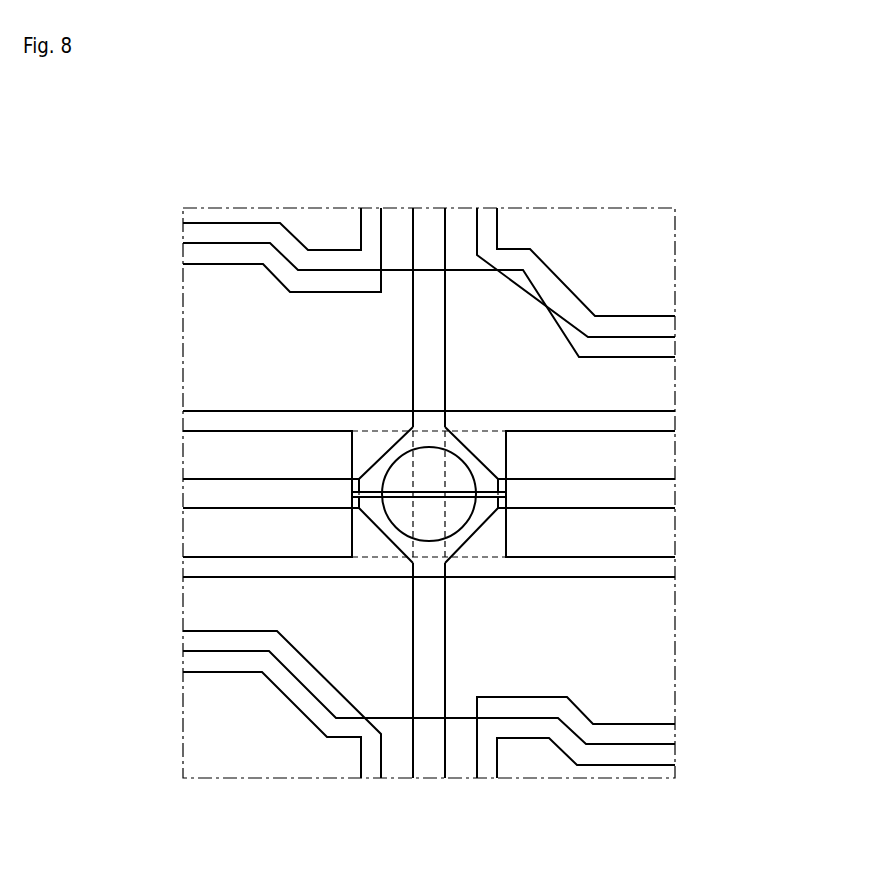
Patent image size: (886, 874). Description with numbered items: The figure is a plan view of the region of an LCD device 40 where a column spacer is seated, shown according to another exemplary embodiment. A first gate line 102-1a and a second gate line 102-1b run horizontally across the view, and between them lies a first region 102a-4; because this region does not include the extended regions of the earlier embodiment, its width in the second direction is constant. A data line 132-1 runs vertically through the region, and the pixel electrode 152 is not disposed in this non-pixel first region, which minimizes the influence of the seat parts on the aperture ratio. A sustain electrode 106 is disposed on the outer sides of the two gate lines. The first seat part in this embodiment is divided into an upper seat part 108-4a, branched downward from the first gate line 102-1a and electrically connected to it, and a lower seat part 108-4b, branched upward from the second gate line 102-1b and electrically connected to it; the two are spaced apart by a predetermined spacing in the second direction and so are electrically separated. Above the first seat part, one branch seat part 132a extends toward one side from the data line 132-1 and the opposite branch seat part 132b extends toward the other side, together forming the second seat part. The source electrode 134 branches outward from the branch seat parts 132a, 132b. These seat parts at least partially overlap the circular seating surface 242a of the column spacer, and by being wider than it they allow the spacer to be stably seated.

The LCD device 40 is at (431, 166).
The pixel electrode 152 is at (289, 220).
The sustain electrode 106 is at (187, 234).
The data line 132-1 is at (432, 398).
The first gate line 102-1a is at (197, 421).
The second gate line 102-1b is at (197, 567).
The first region 102a-4 is at (198, 457).
The source electrode 134 is at (198, 492).
The 1-1st seat part 108-4a is at (367, 447).
The seating surface 242a is at (462, 473).
The 2-1st seat part 132a is at (388, 527).
The 2-2nd seat part 132b is at (478, 508).
The 1-2nd seat part 108-4b is at (486, 545).